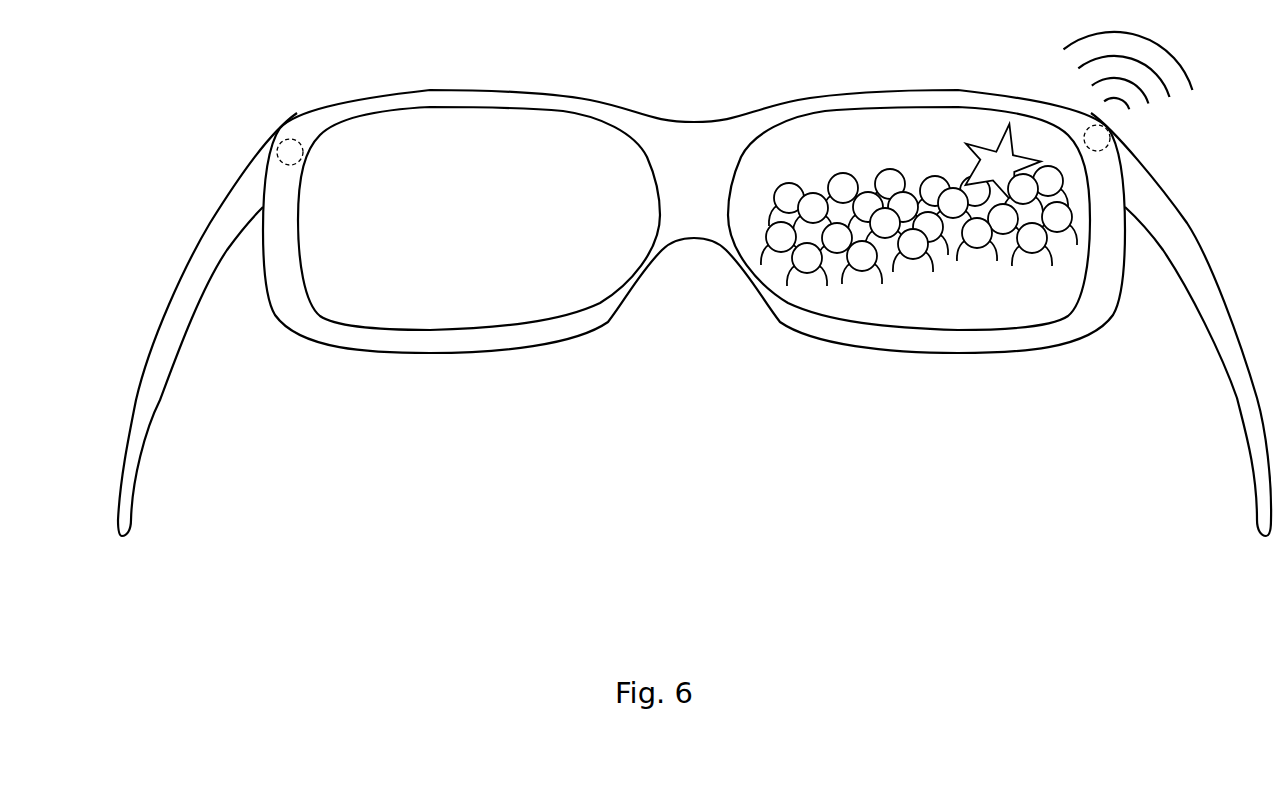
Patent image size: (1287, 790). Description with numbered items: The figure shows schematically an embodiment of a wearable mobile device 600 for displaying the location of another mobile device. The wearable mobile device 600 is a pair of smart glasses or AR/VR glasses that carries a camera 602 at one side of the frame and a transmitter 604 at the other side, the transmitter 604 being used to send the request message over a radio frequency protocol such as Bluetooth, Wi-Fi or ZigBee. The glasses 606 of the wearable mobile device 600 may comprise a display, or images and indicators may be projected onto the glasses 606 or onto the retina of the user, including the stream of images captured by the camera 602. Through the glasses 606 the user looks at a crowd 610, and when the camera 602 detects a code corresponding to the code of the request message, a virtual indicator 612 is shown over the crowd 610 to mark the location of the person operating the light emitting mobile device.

The wearable mobile device 600 is at (207, 241).
The camera 602 is at (290, 157).
The transmitter 604 is at (1097, 138).
The glasses 606 is at (572, 282).
The crowd 610 is at (909, 263).
The virtual indicator 612 is at (973, 153).